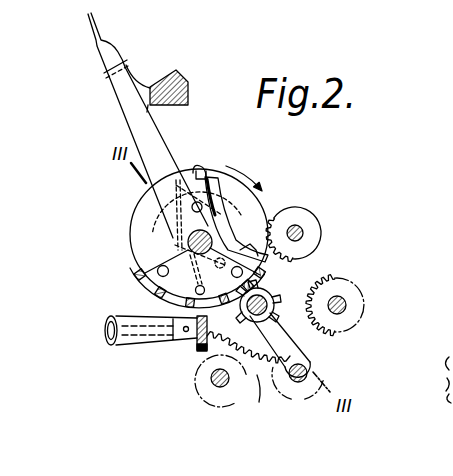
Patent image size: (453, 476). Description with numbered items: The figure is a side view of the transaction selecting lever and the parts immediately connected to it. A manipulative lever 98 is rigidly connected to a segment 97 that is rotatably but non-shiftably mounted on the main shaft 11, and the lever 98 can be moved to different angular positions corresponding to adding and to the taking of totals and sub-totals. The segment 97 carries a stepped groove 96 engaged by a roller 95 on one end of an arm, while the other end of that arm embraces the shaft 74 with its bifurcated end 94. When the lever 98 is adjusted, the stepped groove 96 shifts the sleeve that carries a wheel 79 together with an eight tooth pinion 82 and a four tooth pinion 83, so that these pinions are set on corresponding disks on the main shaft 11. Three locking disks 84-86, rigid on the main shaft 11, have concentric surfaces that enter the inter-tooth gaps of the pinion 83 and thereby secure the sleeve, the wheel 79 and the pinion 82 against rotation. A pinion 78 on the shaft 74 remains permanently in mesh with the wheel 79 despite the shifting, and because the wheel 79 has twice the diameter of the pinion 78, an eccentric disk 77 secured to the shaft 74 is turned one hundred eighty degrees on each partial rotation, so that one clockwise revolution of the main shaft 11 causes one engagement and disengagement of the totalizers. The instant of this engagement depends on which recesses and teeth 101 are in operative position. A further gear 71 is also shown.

The main shaft 11 is at (212, 238).
The gear 71 is at (212, 382).
The shaft 74 is at (304, 232).
The eccentric disk 77 is at (300, 385).
The pinion 78 is at (248, 375).
The wheel 79 is at (300, 337).
The eight tooth pinion 82 is at (269, 304).
The four tooth pinion 83 is at (272, 293).
The locking disks 84-86 is at (215, 173).
The bifurcated end 94 is at (315, 365).
The roller 95 is at (259, 283).
The stepped groove 96 is at (152, 291).
The segment 97 is at (136, 270).
The manipulative lever 98 is at (150, 124).
The teeth 101 is at (194, 173).